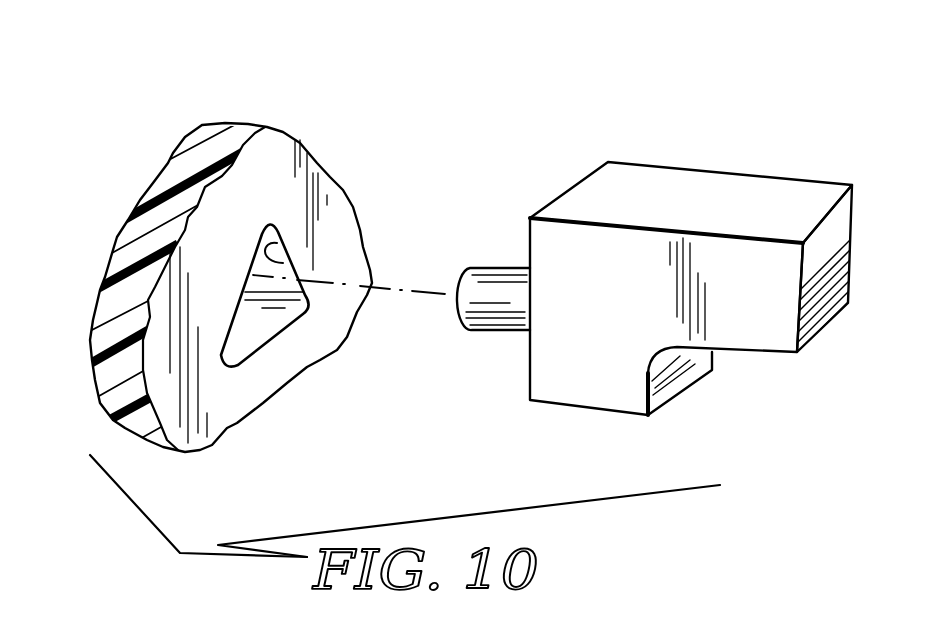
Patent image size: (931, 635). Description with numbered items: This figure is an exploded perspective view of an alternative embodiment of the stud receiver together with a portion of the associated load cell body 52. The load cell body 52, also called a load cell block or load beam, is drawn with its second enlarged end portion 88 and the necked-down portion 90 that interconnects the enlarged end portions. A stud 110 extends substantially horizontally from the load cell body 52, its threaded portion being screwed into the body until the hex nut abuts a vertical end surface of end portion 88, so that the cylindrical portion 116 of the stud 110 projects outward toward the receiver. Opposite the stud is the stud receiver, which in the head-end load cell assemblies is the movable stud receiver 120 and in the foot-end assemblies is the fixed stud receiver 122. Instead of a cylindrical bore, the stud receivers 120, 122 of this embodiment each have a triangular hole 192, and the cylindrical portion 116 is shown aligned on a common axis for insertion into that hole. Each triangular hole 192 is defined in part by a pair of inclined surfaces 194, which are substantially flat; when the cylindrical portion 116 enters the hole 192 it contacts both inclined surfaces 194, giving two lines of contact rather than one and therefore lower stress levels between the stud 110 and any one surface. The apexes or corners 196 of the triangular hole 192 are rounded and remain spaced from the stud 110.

The load cell body 52 is at (702, 197).
The second enlarged end portion 88 is at (617, 363).
The necked-down portion 90 is at (765, 332).
The stud 110 is at (491, 357).
The cylindrical portion 116 is at (483, 283).
The movable stud receiver 120 is at (270, 234).
The fixed stud receiver 122 is at (275, 99).
The triangular hole 192 is at (246, 334).
The inclined surfaces 194 is at (285, 263).
The apexes or corners 196 is at (292, 296).